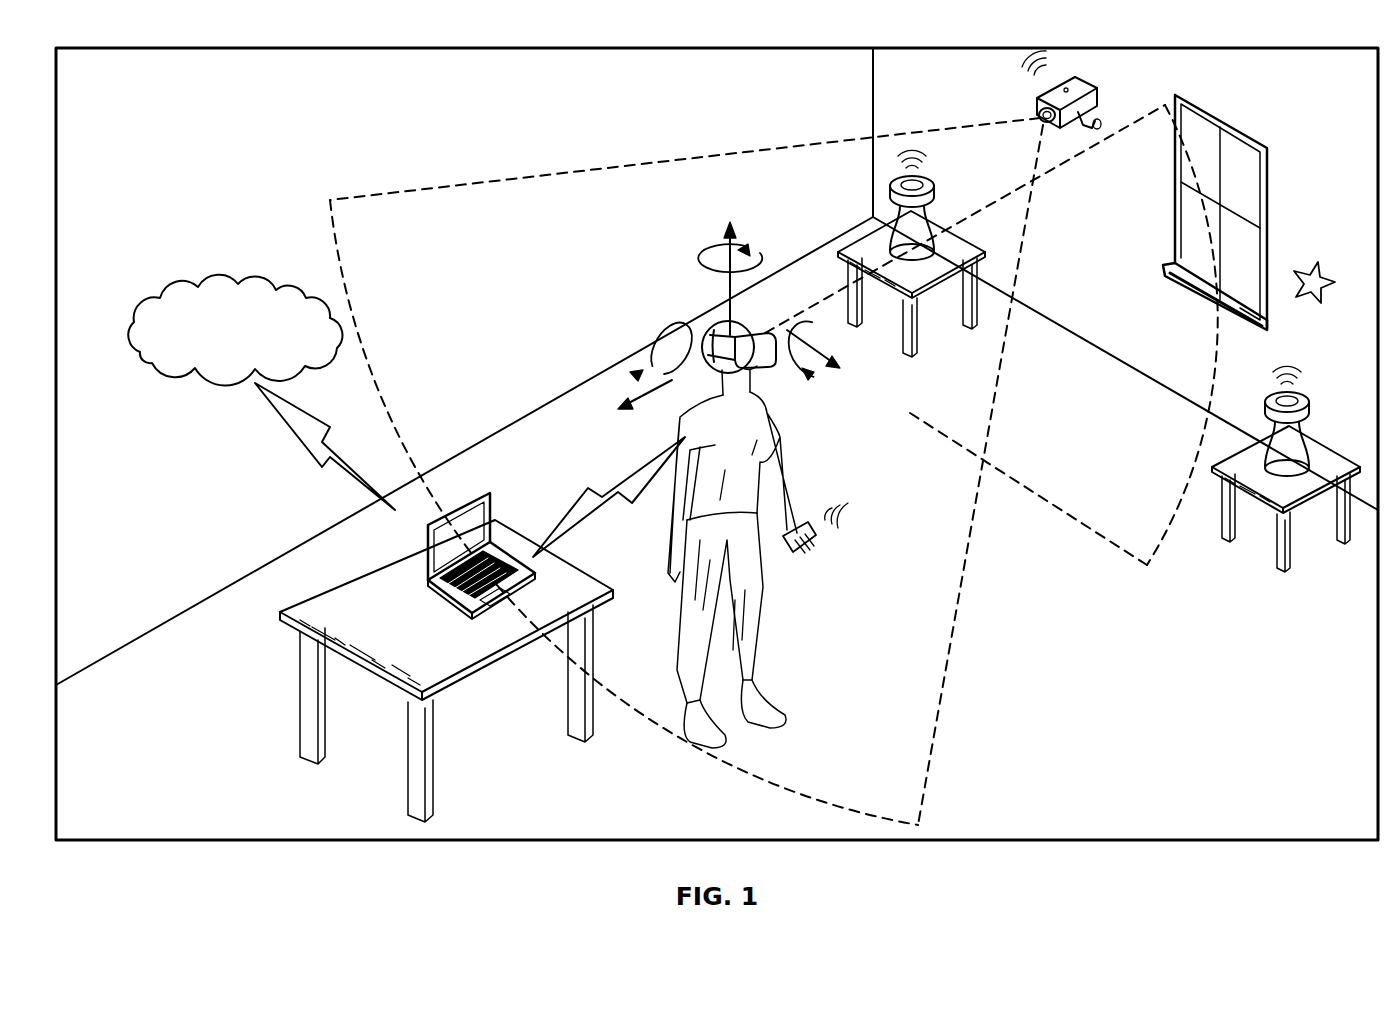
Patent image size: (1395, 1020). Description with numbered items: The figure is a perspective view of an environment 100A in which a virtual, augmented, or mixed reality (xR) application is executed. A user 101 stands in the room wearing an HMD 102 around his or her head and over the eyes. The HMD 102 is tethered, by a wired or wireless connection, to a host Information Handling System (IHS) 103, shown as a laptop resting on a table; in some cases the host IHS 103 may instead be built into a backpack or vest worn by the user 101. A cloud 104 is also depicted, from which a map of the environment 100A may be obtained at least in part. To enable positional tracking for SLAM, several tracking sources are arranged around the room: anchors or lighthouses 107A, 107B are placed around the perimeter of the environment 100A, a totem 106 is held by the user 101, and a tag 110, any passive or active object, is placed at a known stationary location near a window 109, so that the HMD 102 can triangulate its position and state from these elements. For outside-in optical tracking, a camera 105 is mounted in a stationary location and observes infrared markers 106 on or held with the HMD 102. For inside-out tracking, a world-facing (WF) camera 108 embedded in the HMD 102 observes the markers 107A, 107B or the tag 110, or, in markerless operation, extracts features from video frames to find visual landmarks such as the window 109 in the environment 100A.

The environment 100A is at (142, 47).
The user 101 is at (760, 607).
The HMD 102 is at (740, 362).
The host Information Handling System (IHS) 103 is at (428, 550).
The cloud 104 is at (155, 298).
The camera 105 is at (1099, 92).
The totem 106 is at (817, 541).
The anchor or lighthouse 107A is at (936, 193).
The anchor or lighthouse 107B is at (1312, 408).
The world-facing (WF) camera 108 is at (760, 332).
The window 109 is at (1268, 175).
The tag 110 is at (1325, 270).